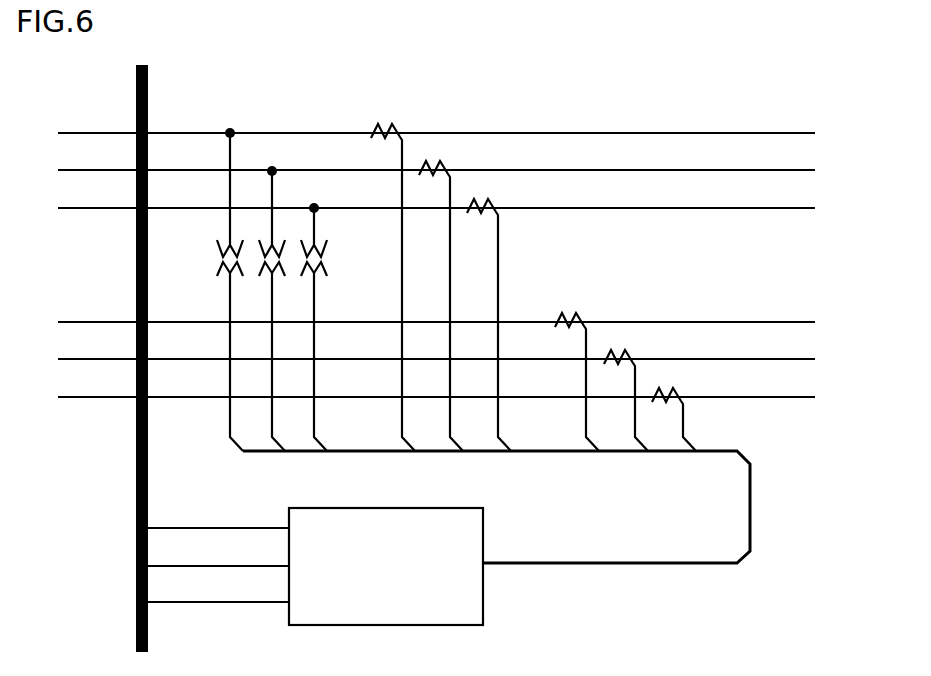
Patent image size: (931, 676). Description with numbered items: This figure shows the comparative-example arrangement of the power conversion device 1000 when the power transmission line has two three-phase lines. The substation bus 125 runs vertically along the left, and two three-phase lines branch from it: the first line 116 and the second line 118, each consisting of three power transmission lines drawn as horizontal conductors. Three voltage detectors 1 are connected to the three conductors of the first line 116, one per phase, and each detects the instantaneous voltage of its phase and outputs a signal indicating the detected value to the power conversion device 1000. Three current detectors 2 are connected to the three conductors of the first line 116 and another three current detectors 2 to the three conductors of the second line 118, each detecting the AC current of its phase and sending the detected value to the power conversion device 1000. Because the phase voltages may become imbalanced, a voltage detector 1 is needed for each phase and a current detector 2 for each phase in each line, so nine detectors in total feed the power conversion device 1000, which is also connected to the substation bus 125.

The voltage detector 1 is at (220, 266).
The current detector 2 is at (393, 128).
The first line 116 is at (823, 123).
The second line 118 is at (823, 310).
The substation bus 125 is at (148, 100).
The power conversion device 1000 is at (449, 508).